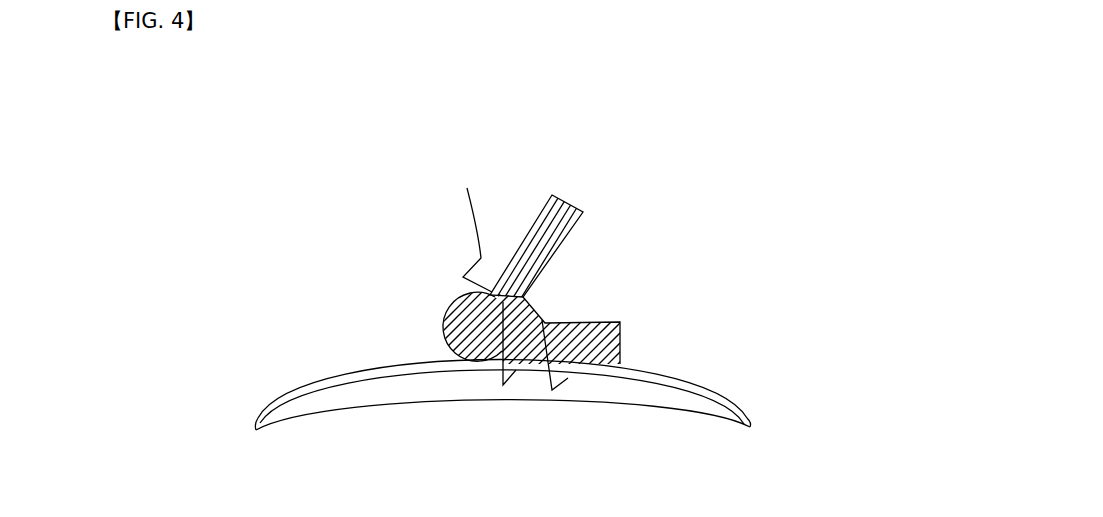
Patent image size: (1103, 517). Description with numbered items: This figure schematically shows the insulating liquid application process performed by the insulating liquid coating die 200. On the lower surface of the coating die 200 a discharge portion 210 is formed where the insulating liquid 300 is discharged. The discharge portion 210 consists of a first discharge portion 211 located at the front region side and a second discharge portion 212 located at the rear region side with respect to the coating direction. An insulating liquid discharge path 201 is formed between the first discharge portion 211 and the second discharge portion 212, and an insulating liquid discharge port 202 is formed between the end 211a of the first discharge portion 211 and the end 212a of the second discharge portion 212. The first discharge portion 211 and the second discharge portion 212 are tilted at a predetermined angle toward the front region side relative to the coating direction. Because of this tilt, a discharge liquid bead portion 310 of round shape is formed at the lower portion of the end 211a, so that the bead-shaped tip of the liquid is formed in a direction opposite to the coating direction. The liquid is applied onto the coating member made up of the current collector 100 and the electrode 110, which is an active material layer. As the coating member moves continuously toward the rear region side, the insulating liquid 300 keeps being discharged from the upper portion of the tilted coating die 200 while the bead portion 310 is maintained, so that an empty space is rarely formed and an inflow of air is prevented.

The current collector 100 is at (326, 414).
The electrode 110 is at (301, 381).
The insulating liquid coating die 200 is at (641, 297).
The insulating liquid discharge path 201 is at (560, 242).
The insulating liquid discharge port 202 is at (519, 372).
The discharge portion 210 is at (641, 305).
The first discharge portion 211 is at (498, 263).
The end of first discharge portion 211a is at (472, 293).
The second discharge portion 212 is at (605, 374).
The end of second discharge portion 212a is at (569, 380).
The insulating liquid 300 is at (536, 325).
The bead portion 310 is at (445, 332).